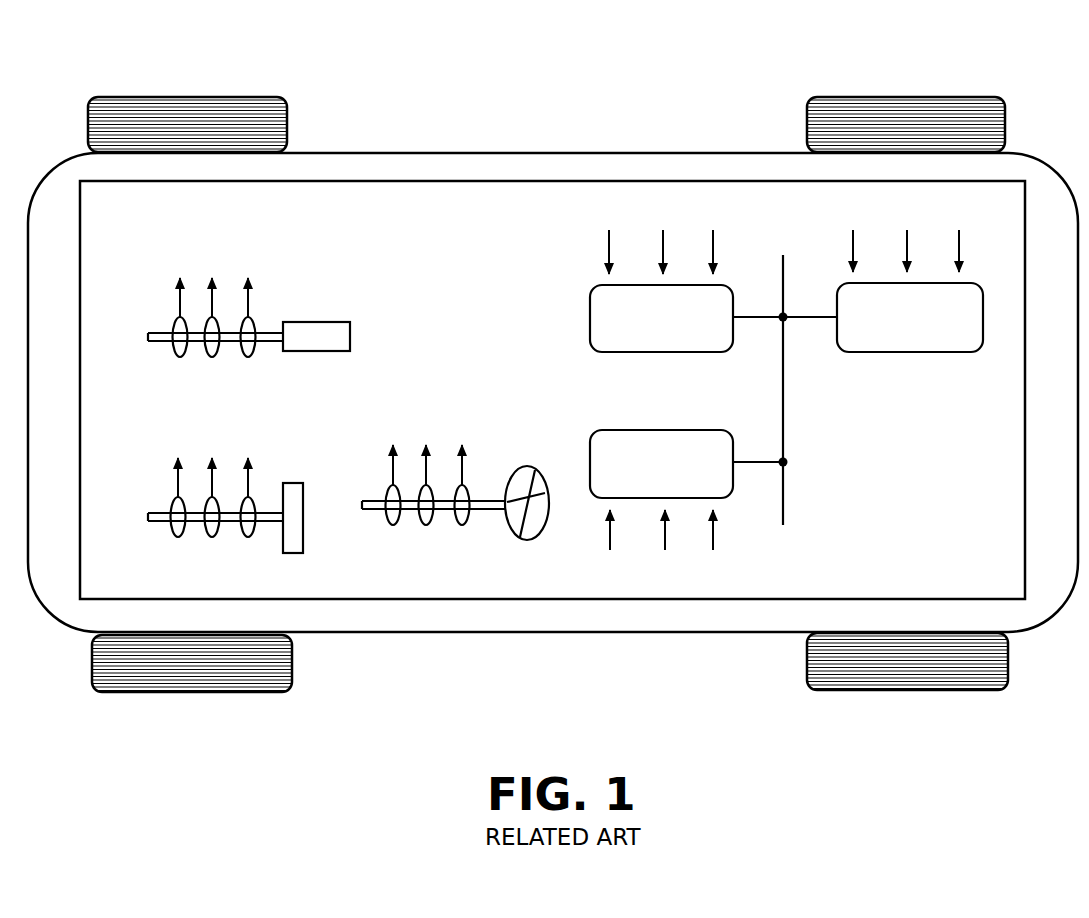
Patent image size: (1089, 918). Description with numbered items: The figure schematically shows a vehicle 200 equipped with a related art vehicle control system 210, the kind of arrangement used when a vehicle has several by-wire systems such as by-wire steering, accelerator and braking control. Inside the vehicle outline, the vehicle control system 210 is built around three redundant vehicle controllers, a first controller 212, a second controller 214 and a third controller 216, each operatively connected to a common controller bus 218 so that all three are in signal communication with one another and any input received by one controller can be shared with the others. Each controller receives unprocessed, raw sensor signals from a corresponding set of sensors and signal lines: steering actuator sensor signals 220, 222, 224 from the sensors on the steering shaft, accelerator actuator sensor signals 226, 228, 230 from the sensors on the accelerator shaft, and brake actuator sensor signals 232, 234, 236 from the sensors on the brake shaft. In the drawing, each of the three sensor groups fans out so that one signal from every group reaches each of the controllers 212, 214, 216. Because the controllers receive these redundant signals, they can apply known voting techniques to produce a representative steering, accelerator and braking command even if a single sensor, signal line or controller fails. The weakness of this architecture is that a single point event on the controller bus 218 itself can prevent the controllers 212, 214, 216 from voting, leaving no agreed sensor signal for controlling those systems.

The vehicle 200 is at (733, 100).
The vehicle control system 210 is at (613, 181).
The first controller 212 is at (698, 352).
The second controller 214 is at (612, 430).
The third controller 216 is at (903, 352).
The controller bus 218 is at (785, 430).
The steering actuator sensor signal 220 is at (393, 460).
The steering actuator sensor signal 222 is at (426, 460).
The steering actuator sensor signal 224 is at (462, 460).
The accelerator actuator sensor signal 226 is at (180, 290).
The accelerator actuator sensor signal 228 is at (212, 290).
The accelerator actuator sensor signal 230 is at (248, 290).
The brake actuator sensor signal 232 is at (178, 470).
The brake actuator sensor signal 234 is at (212, 470).
The brake actuator sensor signal 236 is at (248, 470).